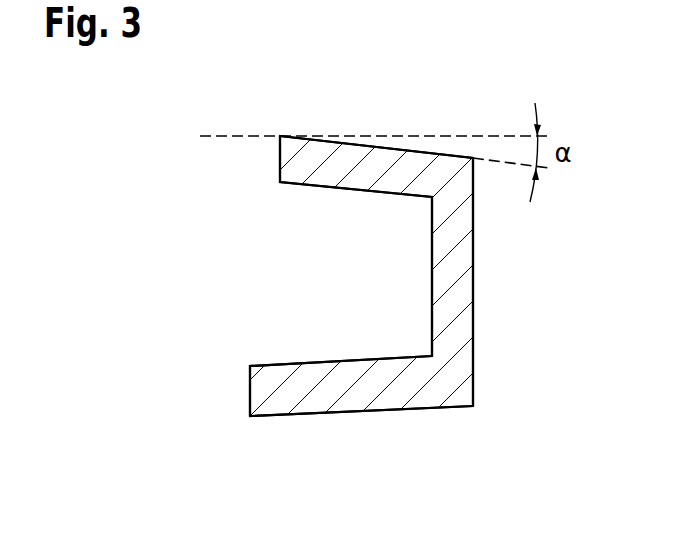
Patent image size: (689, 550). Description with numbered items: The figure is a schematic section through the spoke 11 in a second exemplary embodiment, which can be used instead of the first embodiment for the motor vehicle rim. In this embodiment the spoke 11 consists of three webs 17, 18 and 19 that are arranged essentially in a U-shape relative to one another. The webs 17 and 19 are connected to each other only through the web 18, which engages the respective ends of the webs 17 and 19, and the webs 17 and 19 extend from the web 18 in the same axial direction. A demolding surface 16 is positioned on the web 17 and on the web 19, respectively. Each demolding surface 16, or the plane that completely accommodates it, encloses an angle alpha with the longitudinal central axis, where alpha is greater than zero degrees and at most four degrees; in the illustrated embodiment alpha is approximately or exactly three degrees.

The spoke 11 is at (457, 113).
The demolding surface 16 is at (405, 150).
The web 17 is at (315, 173).
The web 18 is at (460, 293).
The web 19 is at (325, 392).